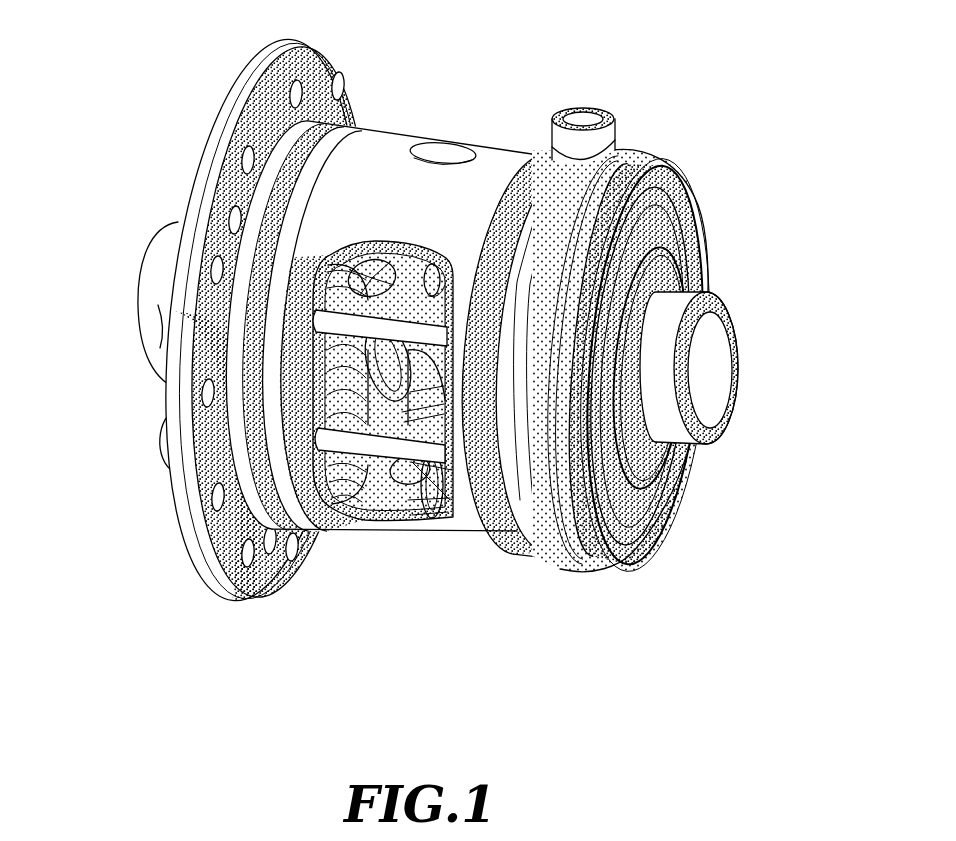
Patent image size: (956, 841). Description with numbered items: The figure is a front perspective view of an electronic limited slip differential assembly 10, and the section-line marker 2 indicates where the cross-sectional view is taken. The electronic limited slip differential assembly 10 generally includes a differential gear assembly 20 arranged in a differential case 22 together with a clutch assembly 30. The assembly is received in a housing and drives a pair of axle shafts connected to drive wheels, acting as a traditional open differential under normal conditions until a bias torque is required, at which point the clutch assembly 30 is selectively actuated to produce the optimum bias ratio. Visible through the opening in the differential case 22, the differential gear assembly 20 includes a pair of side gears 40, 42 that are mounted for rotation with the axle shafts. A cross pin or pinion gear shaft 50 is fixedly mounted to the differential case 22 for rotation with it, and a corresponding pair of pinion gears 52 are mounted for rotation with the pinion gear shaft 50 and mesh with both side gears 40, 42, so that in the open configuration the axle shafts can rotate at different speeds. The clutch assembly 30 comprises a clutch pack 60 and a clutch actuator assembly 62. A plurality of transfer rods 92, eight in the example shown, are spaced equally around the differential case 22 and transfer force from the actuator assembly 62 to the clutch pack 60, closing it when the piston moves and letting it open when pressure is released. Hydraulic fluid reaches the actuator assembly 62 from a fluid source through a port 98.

The electronic limited slip differential assembly 10 is at (438, 355).
The differential gear assembly 20 is at (417, 257).
The differential case 22 is at (408, 143).
The clutch assembly 30 is at (372, 356).
The side gear 40 is at (330, 378).
The side gear 42 is at (431, 282).
The pinion gear shaft 50 is at (430, 405).
The pinion gears 52 is at (384, 273).
The clutch pack 60 is at (338, 185).
The clutch actuator assembly 62 is at (665, 153).
The transfer rods 92 is at (316, 319).
The port 98 is at (582, 110).
The section line 2- 2 is at (65, 296).